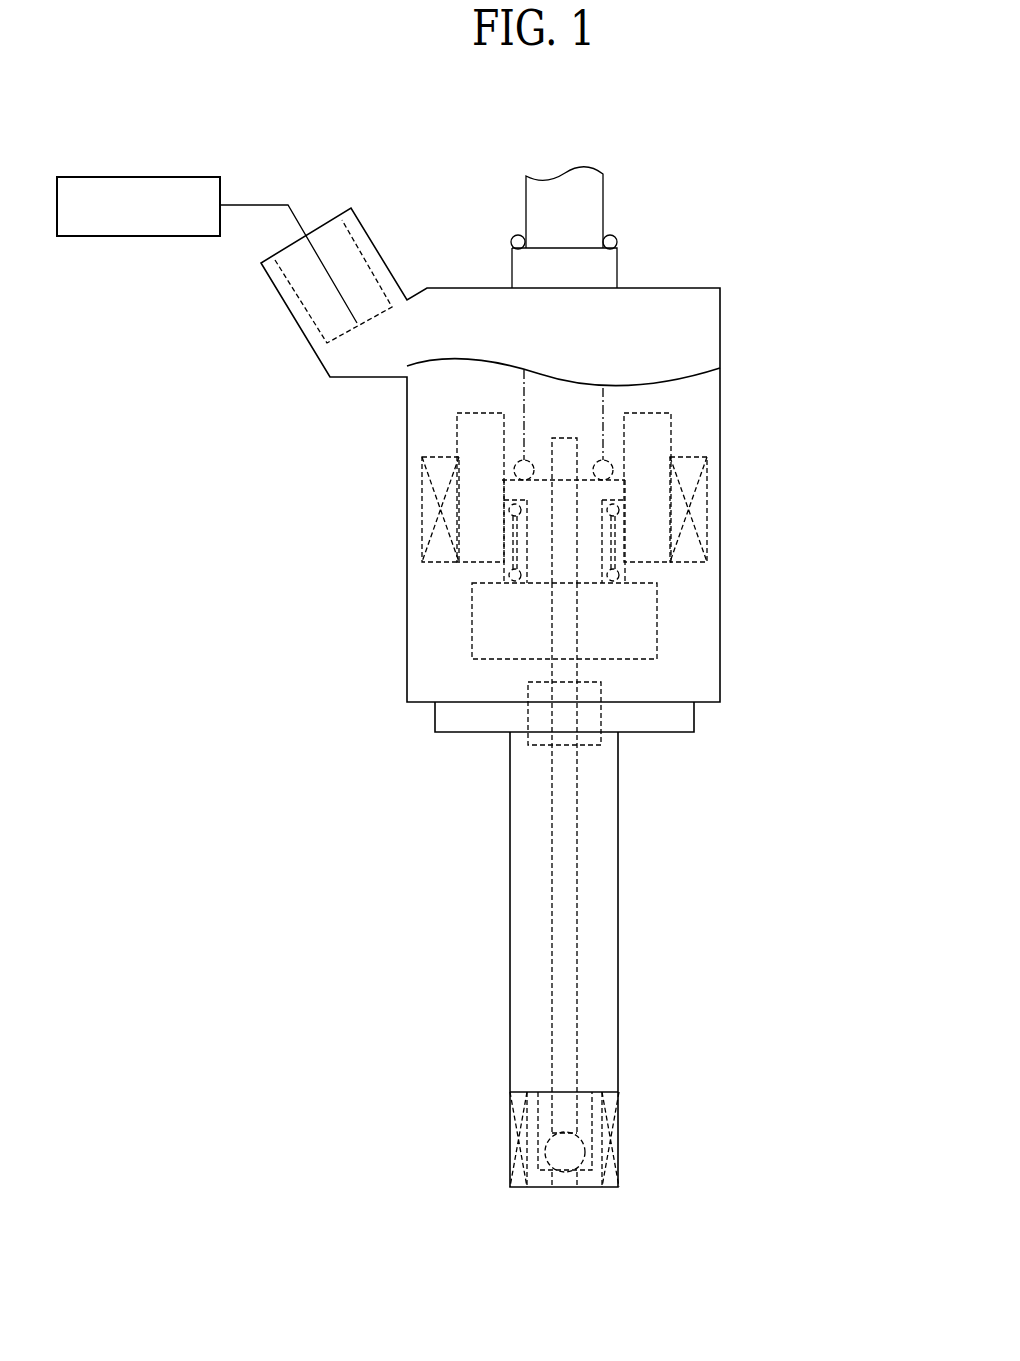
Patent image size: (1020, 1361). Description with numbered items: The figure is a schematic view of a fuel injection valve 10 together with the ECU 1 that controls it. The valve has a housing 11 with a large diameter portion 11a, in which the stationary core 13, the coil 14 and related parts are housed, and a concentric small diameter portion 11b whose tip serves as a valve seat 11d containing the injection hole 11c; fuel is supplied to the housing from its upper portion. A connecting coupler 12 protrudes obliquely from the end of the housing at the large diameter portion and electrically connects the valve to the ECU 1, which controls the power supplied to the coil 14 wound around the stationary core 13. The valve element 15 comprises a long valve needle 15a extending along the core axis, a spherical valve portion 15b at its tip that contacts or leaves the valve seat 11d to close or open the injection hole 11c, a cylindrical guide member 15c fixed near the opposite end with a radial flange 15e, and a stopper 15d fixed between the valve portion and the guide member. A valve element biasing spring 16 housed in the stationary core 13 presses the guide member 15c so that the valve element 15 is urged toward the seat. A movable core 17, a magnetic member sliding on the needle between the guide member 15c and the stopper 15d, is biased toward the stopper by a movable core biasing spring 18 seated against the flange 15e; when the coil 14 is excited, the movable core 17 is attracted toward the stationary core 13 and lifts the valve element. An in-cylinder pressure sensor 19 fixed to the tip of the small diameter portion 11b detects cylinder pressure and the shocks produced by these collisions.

The ECU 1 is at (160, 177).
The fuel injection valve 10 is at (720, 130).
The housing 11 is at (721, 393).
The large diameter portion 11a is at (405, 413).
The small diameter portion 11b is at (510, 883).
The injection hole 11c is at (565, 1187).
The valve seat 11d is at (595, 1187).
The connecting coupler 12 is at (317, 303).
The stationary core 13 is at (652, 435).
The coil 14 is at (425, 497).
The valve element 15 is at (600, 905).
The valve needle 15a is at (553, 822).
The valve portion 15b is at (557, 1155).
The guide member 15c is at (550, 552).
The stopper 15d is at (537, 715).
The flange 15e is at (505, 487).
The valve element biasing spring 16 is at (525, 441).
The movable core 17 is at (640, 619).
The movable core biasing spring 18 is at (513, 572).
The in-cylinder pressure sensor 19 is at (605, 1100).